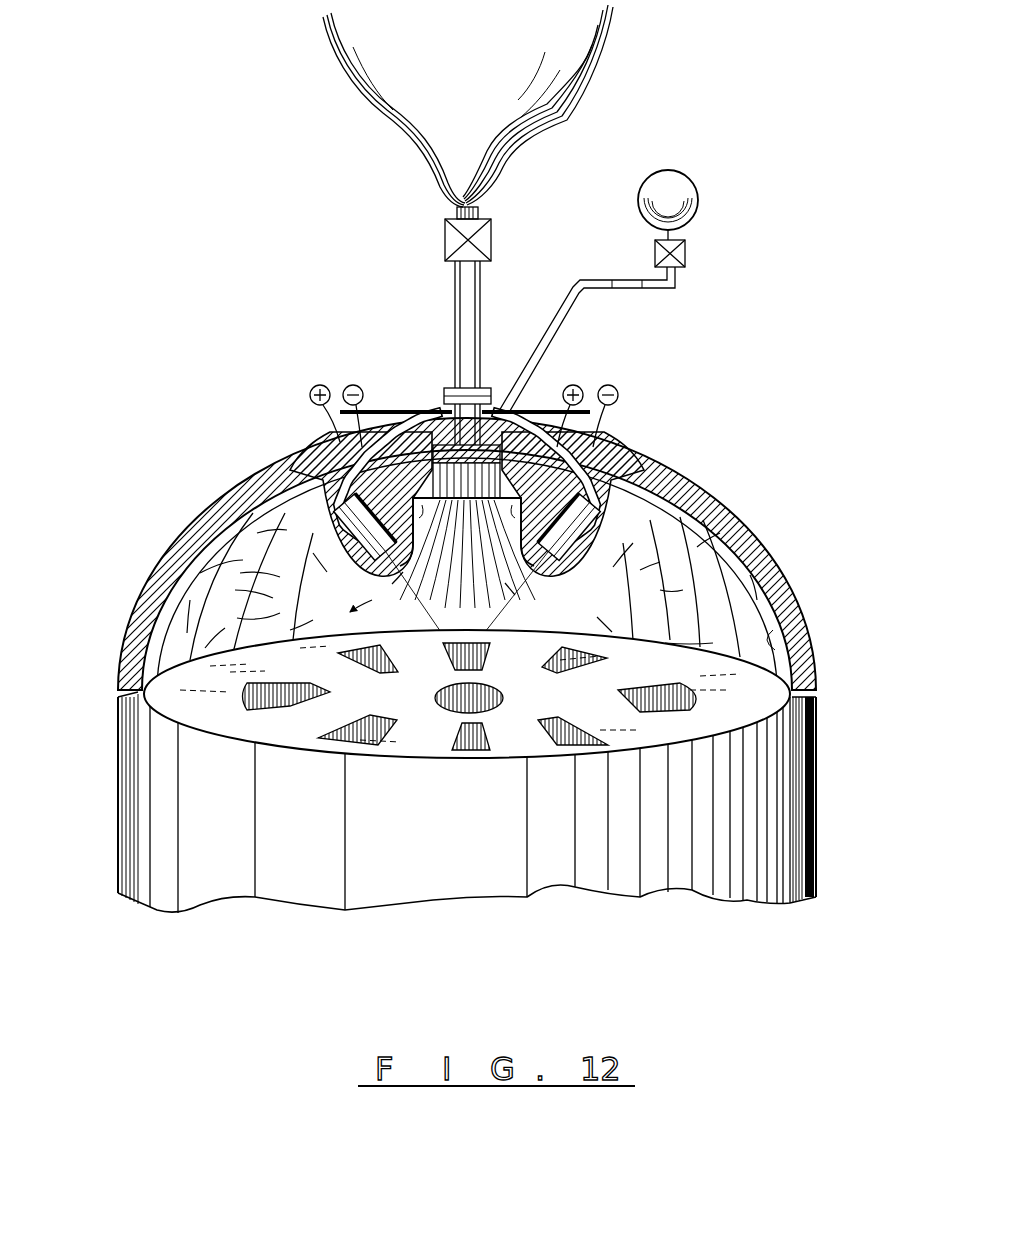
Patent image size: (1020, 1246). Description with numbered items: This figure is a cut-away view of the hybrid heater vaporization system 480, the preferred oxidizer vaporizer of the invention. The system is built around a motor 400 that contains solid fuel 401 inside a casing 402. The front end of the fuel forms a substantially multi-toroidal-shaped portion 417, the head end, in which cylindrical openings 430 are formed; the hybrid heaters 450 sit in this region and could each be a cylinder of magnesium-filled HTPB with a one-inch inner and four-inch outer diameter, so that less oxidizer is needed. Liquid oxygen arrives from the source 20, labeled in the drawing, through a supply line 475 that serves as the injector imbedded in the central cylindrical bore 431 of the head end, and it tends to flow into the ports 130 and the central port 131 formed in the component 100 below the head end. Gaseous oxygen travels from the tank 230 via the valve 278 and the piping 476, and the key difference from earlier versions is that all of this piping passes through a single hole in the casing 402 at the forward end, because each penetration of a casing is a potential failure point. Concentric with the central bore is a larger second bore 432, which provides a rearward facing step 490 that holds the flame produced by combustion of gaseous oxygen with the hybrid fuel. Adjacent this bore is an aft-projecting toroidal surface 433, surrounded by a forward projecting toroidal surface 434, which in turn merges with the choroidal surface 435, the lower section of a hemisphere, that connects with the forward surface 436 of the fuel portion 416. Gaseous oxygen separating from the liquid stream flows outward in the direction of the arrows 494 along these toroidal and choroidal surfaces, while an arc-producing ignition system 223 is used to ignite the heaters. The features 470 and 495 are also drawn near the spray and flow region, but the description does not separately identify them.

The liquid oxygen receiver 20 is at (388, 113).
The substrate platform 100 is at (514, 726).
The ports 130 is at (340, 745).
The port 131 is at (433, 700).
The arc-producing ignition system 223 is at (316, 386).
The tank 230 is at (697, 205).
The valve 278 is at (688, 254).
The motor 400 is at (463, 653).
The fuel 401 is at (118, 838).
The casing 402 is at (165, 558).
The portion of fuel 416 is at (765, 780).
The multi-toroidal-shaped portion of solid fuel 417 is at (692, 512).
The cylindrical openings 430 is at (433, 489).
The central cylindrical bore 431 is at (510, 447).
The second bore 432 is at (345, 520).
The aft-projecting toroidal surface 433 is at (465, 536).
The forward projecting toroidal surface 434 is at (695, 524).
The choroidal surface 435 is at (780, 620).
The forward surface 436 is at (760, 672).
The heaters 450 is at (262, 492).
The spray passage 470 is at (472, 608).
The injector 475 is at (428, 412).
The piping 476 is at (590, 280).
The hybrid heater vaporization system 480 is at (735, 360).
The rearward facing step 490 is at (384, 418).
The arrows 494 is at (178, 622).
The flow path 495 is at (157, 650).